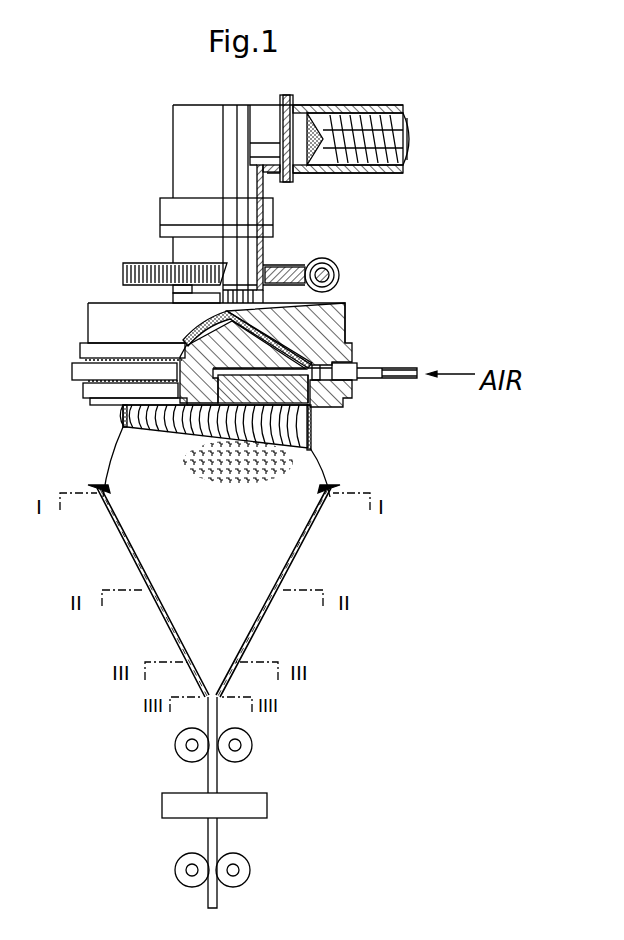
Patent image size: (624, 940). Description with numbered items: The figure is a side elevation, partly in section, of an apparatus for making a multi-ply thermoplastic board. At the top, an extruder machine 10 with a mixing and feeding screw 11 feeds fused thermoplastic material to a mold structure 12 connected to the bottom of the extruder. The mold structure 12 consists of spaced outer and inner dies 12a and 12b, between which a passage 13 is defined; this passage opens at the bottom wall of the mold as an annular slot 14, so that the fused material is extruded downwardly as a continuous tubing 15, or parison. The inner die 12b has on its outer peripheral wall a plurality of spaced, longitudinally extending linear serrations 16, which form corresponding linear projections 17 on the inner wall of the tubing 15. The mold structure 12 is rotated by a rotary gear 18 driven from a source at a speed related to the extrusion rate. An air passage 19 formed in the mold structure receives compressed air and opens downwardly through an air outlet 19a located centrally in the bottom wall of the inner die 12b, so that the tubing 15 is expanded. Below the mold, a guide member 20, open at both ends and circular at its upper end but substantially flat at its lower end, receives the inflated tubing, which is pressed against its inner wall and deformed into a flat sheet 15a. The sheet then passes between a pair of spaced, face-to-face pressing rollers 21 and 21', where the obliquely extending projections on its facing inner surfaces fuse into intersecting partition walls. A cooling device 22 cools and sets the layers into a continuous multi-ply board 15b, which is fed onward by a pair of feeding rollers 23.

The extruder machine 10 is at (170, 124).
The mixing and feeding screw 11 is at (407, 127).
The mold structure 12 is at (85, 322).
The outer die 12a is at (348, 335).
The inner die 12b is at (313, 432).
The passage 13 is at (240, 368).
The annular slot 14 is at (312, 405).
The continuous tubing 15 is at (123, 412).
The flat sheet 15a is at (217, 770).
The multi-ply board 15b is at (217, 835).
The linear serrations 16 is at (313, 413).
The linear projections 17 is at (123, 428).
The rotary gear 18 is at (123, 273).
The air passage 19 is at (377, 380).
The air outlet 19a is at (203, 433).
The guide member 20 is at (307, 545).
The pressing roller 21 is at (168, 745).
The pressing roller 21' is at (262, 745).
The cooling device 22 is at (267, 807).
The feeding rollers 23 is at (175, 868).